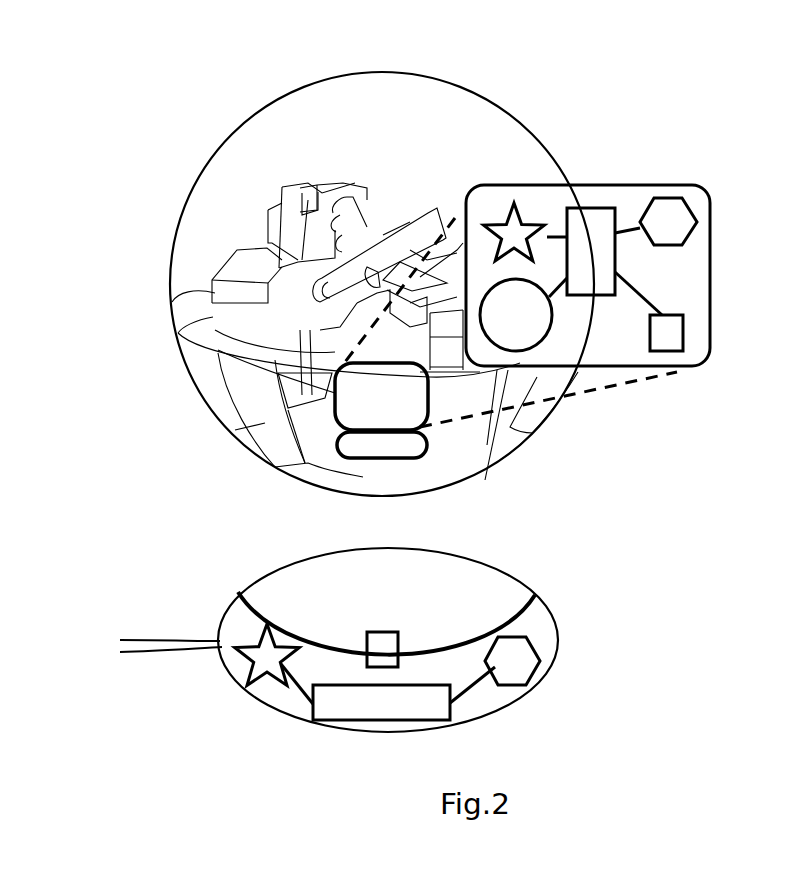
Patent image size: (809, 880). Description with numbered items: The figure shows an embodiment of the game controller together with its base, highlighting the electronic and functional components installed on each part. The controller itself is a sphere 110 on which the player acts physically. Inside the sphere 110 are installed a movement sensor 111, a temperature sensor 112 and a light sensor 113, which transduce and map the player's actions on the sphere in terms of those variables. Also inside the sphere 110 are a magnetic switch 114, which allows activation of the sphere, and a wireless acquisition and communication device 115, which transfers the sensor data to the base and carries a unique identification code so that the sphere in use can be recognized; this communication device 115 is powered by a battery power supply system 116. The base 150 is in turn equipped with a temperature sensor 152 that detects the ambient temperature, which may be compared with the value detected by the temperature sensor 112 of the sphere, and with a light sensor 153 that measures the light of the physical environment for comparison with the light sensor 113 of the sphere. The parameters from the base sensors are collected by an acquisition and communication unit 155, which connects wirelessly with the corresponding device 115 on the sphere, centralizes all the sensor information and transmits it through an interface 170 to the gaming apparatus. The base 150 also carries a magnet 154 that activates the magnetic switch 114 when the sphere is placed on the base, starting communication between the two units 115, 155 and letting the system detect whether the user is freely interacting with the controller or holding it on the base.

The sphere 110 is at (488, 100).
The movement sensor 111 is at (532, 330).
The temperature sensor 112 is at (663, 215).
The light sensor 113 is at (515, 217).
The magnetic switch 114 is at (662, 349).
The wireless acquisition and communication device 115 is at (588, 216).
The battery power supply system 116 is at (382, 458).
The base 150 is at (552, 618).
The temperature sensor 152 is at (503, 683).
The light sensor 153 is at (250, 683).
The magnet 154 is at (380, 622).
The acquisition and communication unit 155 is at (367, 703).
The interface 170 is at (153, 638).